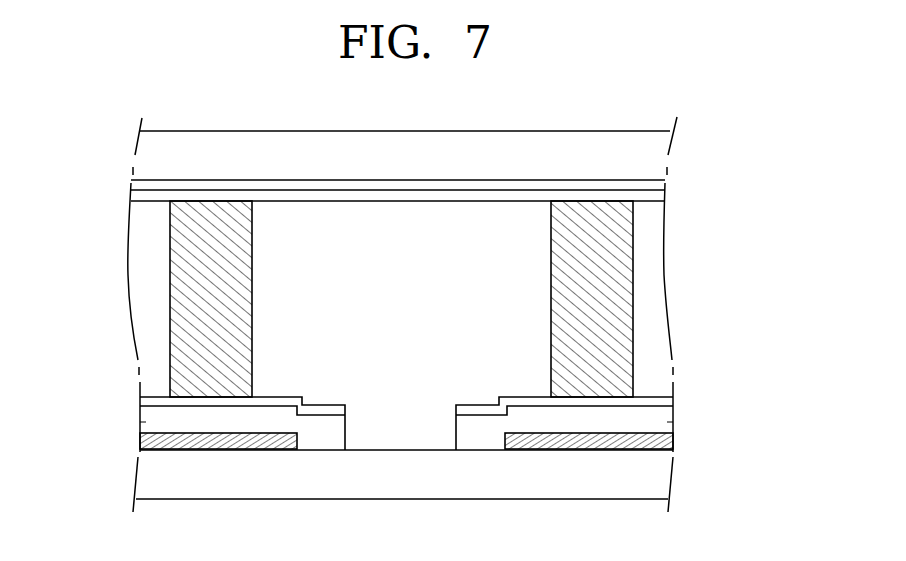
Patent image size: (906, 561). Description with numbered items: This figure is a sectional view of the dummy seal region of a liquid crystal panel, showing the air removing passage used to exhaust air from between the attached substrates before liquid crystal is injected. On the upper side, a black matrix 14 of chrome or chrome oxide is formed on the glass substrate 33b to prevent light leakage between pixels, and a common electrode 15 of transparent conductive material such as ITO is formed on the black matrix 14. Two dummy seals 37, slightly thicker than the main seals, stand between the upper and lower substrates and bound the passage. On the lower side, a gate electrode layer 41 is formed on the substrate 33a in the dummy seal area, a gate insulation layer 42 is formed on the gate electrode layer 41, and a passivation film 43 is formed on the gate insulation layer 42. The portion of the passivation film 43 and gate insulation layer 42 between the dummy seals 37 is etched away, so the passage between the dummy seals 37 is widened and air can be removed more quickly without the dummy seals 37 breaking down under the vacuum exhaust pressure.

The glass substrate 33b is at (670, 147).
The black matrix 14 is at (660, 182).
The common electrode 15 is at (657, 197).
The dummy seal 37 is at (182, 300).
The passivation film 43 is at (140, 399).
The gate insulation layer 42 is at (148, 422).
The gate electrode layer 41 is at (142, 440).
The substrate 33a is at (663, 467).